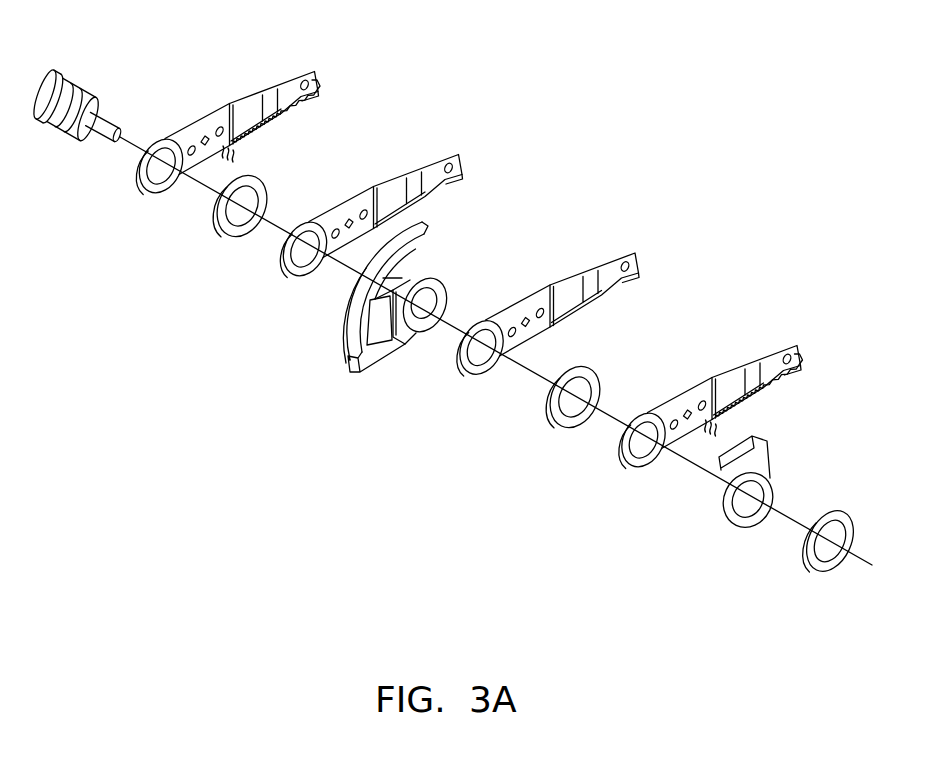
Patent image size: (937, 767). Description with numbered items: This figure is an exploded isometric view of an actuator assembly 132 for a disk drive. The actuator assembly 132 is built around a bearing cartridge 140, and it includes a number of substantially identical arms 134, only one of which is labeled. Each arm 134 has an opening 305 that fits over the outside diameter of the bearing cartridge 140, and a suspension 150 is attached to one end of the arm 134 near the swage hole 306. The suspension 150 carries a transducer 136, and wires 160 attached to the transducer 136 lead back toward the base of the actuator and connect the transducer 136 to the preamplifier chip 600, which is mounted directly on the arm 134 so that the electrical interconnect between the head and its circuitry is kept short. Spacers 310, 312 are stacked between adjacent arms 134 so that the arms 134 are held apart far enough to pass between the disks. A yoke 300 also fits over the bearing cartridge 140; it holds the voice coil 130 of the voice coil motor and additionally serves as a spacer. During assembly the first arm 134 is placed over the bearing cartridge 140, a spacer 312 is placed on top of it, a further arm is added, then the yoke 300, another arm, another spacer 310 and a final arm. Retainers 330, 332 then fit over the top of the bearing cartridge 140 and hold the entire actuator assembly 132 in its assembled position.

The voice coil 130 is at (350, 352).
The actuator assembly 132 is at (183, 328).
The arm 134 is at (259, 150).
The transducer 136 is at (343, 75).
The bearing cartridge 140 is at (57, 128).
The suspension 150 is at (255, 97).
The wires 160 is at (332, 96).
The yoke 300 is at (415, 332).
The opening 305 is at (161, 192).
The swage hole 306 is at (527, 302).
The spacer 310 is at (575, 429).
The spacer 312 is at (265, 181).
The retainer 330 is at (748, 527).
The retainer 332 is at (828, 572).
The preamplifier chip 600 is at (268, 103).